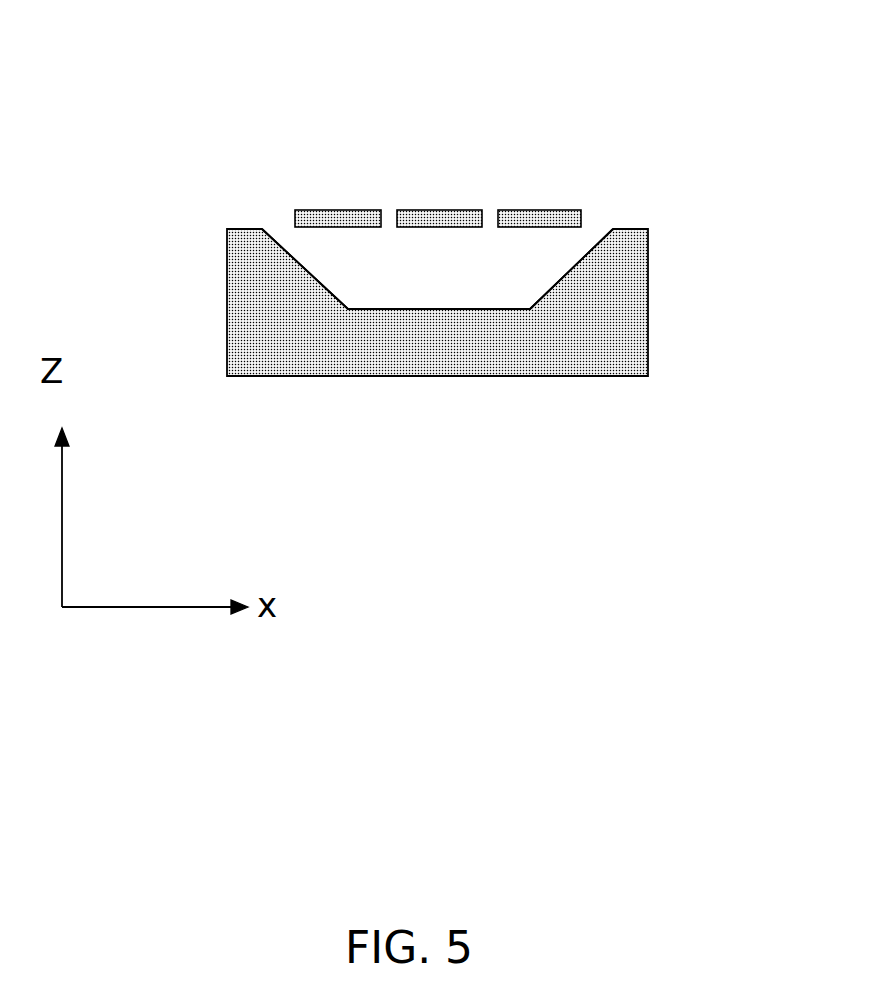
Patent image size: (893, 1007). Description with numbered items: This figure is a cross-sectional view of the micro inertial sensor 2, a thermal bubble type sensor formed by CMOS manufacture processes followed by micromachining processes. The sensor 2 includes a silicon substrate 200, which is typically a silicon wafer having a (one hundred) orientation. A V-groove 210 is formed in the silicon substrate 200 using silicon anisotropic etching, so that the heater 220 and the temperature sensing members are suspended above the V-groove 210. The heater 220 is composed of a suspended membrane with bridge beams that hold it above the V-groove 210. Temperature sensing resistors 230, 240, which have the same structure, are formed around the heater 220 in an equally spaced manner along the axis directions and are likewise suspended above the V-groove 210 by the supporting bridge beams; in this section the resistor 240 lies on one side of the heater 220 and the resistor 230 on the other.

The sensor 2 is at (468, 193).
The silicon substrate 200 is at (455, 356).
The V-groove 210 is at (458, 282).
The heater 220 is at (427, 217).
The temperature sensing resistor 230 is at (560, 218).
The temperature sensing resistor 240 is at (328, 208).